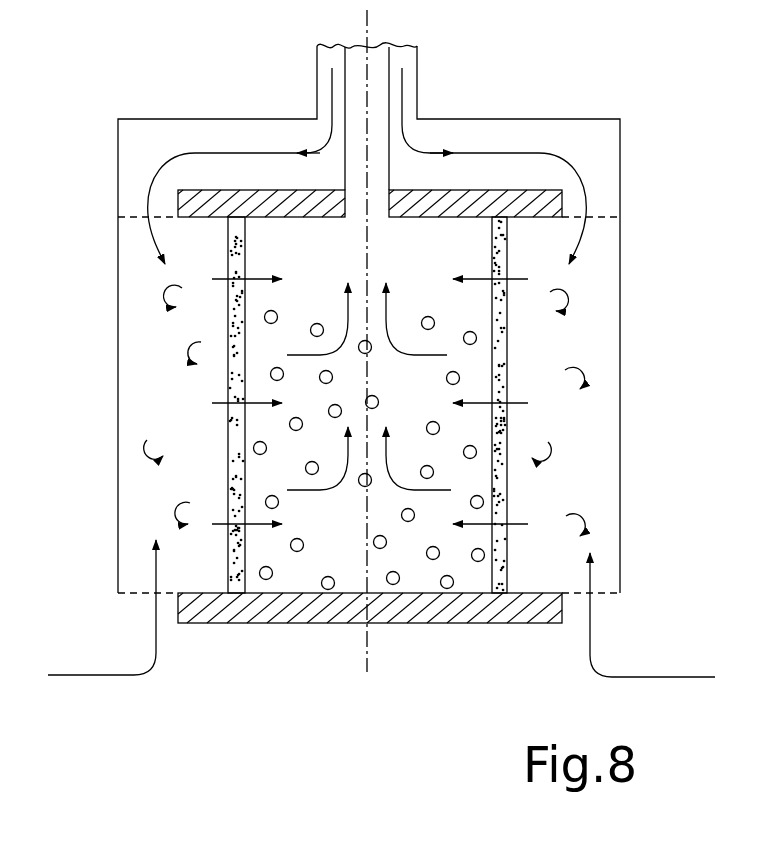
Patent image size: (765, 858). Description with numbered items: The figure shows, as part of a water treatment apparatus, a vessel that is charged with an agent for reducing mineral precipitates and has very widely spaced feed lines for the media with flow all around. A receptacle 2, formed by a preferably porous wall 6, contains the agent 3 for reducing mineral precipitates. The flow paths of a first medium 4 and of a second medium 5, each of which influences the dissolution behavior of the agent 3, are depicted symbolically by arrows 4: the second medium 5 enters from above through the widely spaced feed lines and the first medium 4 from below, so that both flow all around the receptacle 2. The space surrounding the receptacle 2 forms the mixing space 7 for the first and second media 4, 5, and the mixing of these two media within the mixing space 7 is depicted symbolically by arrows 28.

The receptacle 2 is at (418, 636).
The agent for reducing mineral precipitates 3 is at (428, 423).
The first medium 4 is at (100, 675).
The second medium 5 is at (237, 152).
The porous wall 6 is at (507, 338).
The mixing space 7 is at (191, 442).
The arrows 28 is at (167, 313).